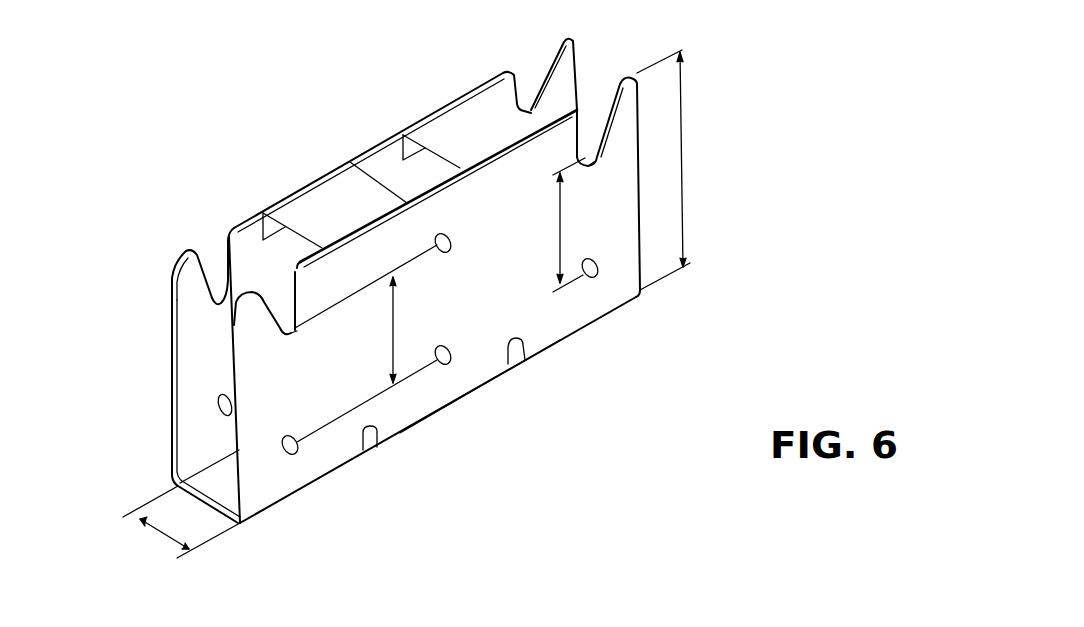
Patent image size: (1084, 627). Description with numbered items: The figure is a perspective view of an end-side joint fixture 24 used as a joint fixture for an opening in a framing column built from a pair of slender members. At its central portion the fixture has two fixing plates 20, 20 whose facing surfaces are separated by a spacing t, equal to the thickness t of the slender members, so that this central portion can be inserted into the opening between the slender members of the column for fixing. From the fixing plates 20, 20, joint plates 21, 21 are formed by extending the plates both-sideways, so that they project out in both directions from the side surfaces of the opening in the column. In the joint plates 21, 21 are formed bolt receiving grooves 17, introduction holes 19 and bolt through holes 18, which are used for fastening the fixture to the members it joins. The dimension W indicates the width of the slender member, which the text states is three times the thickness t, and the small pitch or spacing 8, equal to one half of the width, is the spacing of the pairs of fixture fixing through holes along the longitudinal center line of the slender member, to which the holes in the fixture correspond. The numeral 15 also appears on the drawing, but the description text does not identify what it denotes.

The spacing 8 is at (393, 327).
The holes 15 is at (452, 347).
The bolt receiving groove 17 is at (292, 333).
The bolt through hole 18 is at (294, 454).
The introduction hole 19 is at (532, 95).
The fixing plate 20 is at (380, 167).
The joint plate 21 is at (267, 473).
The end-side joint fixture 24 is at (567, 345).
The width W is at (683, 172).
The thickness t is at (165, 535).